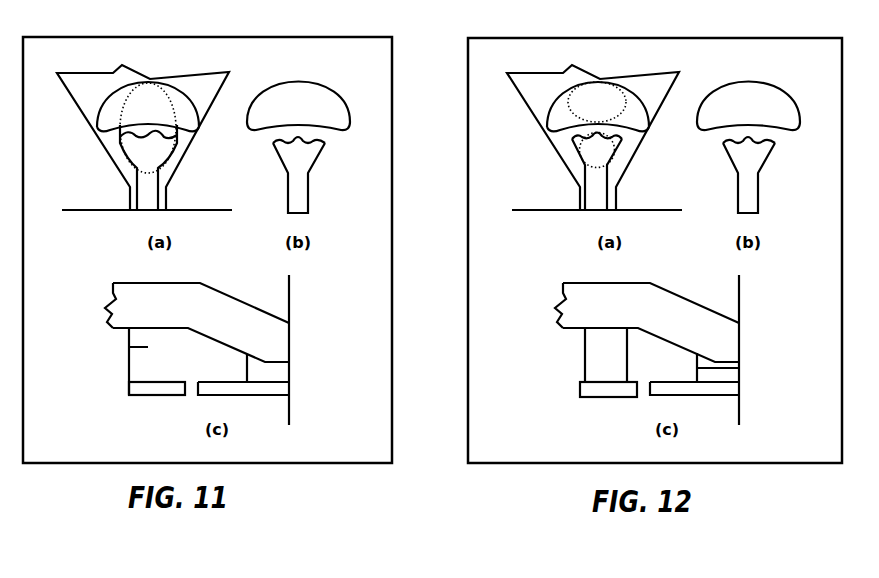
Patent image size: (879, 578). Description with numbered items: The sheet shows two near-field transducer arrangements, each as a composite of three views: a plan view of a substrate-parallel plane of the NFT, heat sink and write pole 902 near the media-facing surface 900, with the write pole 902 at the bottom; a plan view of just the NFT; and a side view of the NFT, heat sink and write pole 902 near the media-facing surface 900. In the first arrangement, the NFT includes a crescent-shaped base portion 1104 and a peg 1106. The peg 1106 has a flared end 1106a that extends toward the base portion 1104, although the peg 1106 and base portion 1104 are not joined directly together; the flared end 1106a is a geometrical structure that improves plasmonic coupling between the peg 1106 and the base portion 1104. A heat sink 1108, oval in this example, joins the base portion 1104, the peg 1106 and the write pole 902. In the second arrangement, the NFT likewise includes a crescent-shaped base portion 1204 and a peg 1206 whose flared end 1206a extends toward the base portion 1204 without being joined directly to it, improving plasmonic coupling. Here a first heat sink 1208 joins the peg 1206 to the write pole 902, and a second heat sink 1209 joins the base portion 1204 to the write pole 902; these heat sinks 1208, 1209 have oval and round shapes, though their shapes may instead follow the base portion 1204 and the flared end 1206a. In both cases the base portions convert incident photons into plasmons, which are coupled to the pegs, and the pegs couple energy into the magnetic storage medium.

In FIG. 11, the media-facing surface 900 is at (98, 212).
In FIG. 12, the media-facing surface 900 is at (667, 317).
In FIG. 11, the write pole 902 is at (229, 72).
In FIG. 12, the write pole 902 is at (618, 213).
In FIG. 11, the crescent-shaped base portion 1104 is at (97, 108).
In FIG. 11, the peg 1106 is at (145, 198).
In FIG. 11, the flared end 1106a is at (275, 145).
In FIG. 11, the heat sink 1108 is at (120, 136).
In FIG. 11, the second heat sink 1209 is at (128, 347).
In FIG. 12, the second heat sink 1209 is at (549, 232).
In FIG. 12, the crescent-shaped base portion 1204 is at (641, 233).
In FIG. 12, the peg 1206 is at (672, 289).
In FIG. 12, the flared end 1206a is at (725, 170).
In FIG. 12, the first heat sink 1208 is at (649, 262).